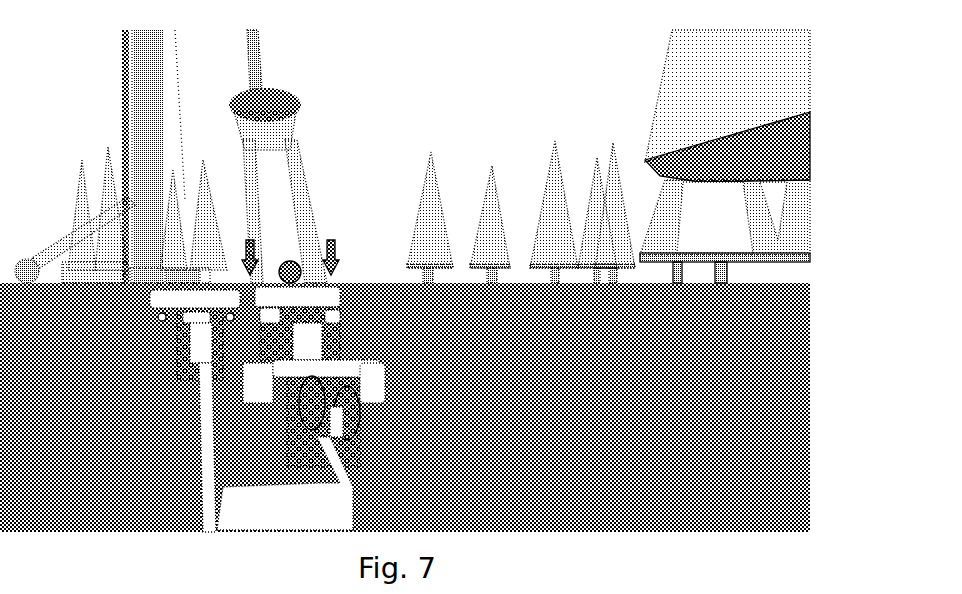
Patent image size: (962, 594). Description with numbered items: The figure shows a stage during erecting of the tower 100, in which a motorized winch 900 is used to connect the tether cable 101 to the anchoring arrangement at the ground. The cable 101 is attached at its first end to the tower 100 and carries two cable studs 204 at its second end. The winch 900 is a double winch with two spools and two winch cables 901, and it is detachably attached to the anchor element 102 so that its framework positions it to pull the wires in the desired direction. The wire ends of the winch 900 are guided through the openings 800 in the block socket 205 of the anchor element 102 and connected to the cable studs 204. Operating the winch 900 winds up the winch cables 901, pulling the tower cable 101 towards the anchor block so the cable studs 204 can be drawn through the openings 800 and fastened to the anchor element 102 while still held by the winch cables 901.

The tower 100 is at (146, 103).
The cable 101 is at (258, 50).
The cable studs 204 is at (297, 155).
The winch cable 901 is at (297, 173).
The block socket 205 is at (175, 298).
The openings 800 is at (168, 330).
The anchor element 102 is at (200, 407).
The motorized winch 900 is at (365, 407).